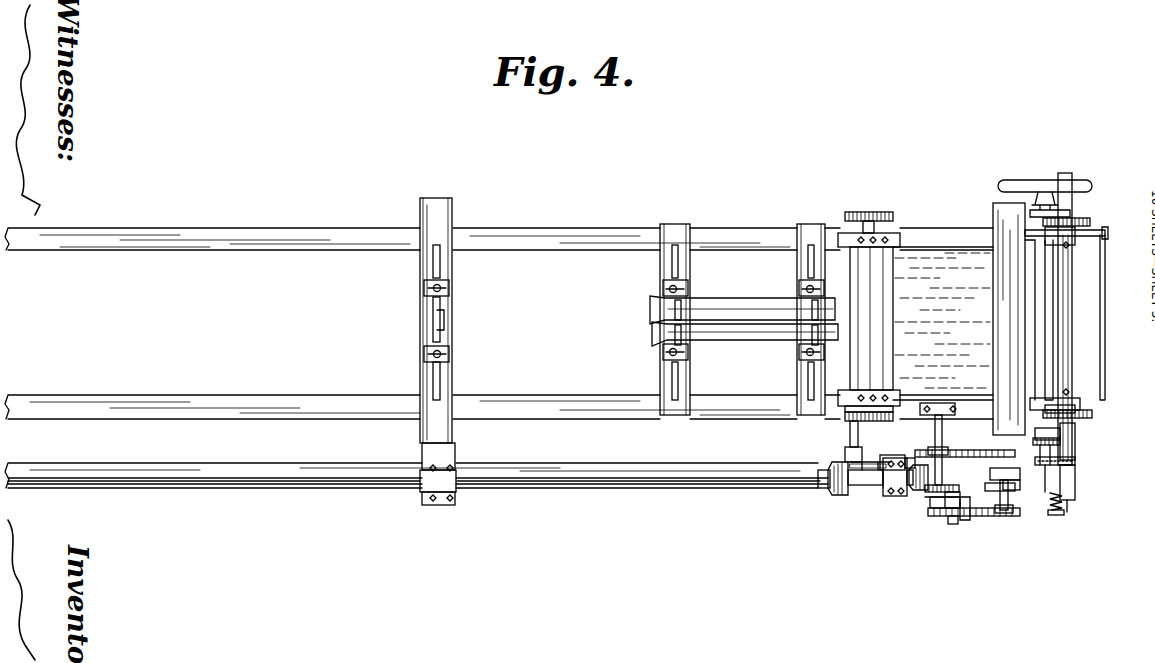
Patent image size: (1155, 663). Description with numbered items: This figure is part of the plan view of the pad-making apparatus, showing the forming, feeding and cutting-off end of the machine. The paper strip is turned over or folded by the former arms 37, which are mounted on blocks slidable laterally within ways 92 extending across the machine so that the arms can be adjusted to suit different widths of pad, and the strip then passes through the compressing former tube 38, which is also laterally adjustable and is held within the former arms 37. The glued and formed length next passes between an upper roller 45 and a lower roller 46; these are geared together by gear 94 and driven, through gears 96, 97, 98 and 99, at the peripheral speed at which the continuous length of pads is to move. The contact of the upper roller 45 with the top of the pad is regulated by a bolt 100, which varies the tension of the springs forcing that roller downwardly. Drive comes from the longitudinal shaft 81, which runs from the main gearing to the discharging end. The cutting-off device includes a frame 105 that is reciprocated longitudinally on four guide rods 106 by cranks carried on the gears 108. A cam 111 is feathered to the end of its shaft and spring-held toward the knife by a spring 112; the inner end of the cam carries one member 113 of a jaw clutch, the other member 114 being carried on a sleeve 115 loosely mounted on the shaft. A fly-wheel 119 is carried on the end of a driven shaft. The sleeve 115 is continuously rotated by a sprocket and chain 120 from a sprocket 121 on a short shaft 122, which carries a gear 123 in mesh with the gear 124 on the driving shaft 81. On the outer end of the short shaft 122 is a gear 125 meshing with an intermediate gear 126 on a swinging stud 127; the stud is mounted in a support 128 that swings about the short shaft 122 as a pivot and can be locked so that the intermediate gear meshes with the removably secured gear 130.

The formers 37 is at (440, 326).
The compressing former tube 38 is at (712, 304).
The roller 45 is at (864, 255).
The roller 46 is at (885, 300).
The shaft 81 is at (672, 479).
The ways 92 is at (452, 228).
The gear 94 is at (880, 213).
The gear 96 is at (886, 422).
The gear 97 is at (845, 416).
The gear 98 is at (877, 478).
The gear 99 is at (838, 492).
The bolt 100 is at (866, 235).
The frame 105 is at (1072, 240).
The guide rods 106 is at (1068, 222).
The gears 108 is at (1062, 466).
The cam 111 is at (1064, 503).
The spring 112 is at (1064, 512).
The jaw clutch member 113 is at (1054, 444).
The jaw clutch member 114 is at (1067, 492).
The sleeve 115 is at (1055, 470).
The fly-wheel 119 is at (1016, 182).
The sprocket and chain 120 is at (968, 455).
The sprocket 121 is at (920, 446).
The short shaft 122 is at (942, 433).
The gear 123 is at (922, 490).
The gear 124 is at (900, 497).
The gear 125 is at (958, 518).
The intermediate gear 126 is at (968, 520).
The swinging stud 127 is at (952, 500).
The support 128 is at (936, 510).
The gear 130 is at (1000, 518).